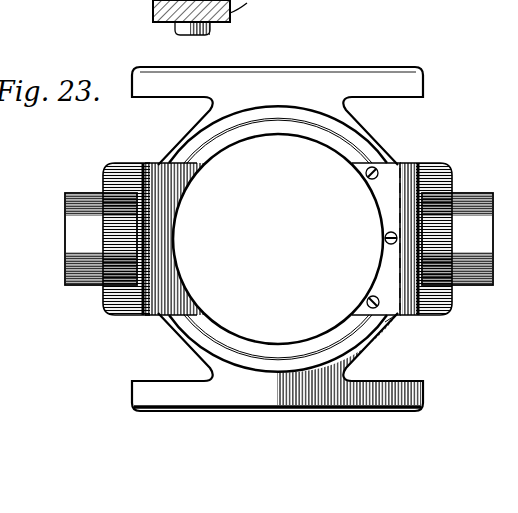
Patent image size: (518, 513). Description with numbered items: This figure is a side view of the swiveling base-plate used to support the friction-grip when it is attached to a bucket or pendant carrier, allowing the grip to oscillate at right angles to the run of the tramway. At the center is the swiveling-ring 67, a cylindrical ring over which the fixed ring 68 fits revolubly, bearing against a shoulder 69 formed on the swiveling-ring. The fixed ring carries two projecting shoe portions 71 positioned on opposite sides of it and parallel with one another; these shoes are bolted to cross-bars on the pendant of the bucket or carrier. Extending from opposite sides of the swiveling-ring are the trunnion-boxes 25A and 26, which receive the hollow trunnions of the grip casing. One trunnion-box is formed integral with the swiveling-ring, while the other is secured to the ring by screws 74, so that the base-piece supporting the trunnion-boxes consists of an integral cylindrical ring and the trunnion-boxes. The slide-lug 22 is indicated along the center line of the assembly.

The slide-lug 22 is at (277, 420).
The shoe portions 71 is at (303, 82).
The fixed ring 68 is at (388, 139).
The shoulder 69 is at (382, 339).
The swiveling-ring 67 is at (261, 139).
The screws 74 is at (364, 175).
The trunnion-box 25A is at (101, 239).
The trunnion-box 26 is at (457, 239).